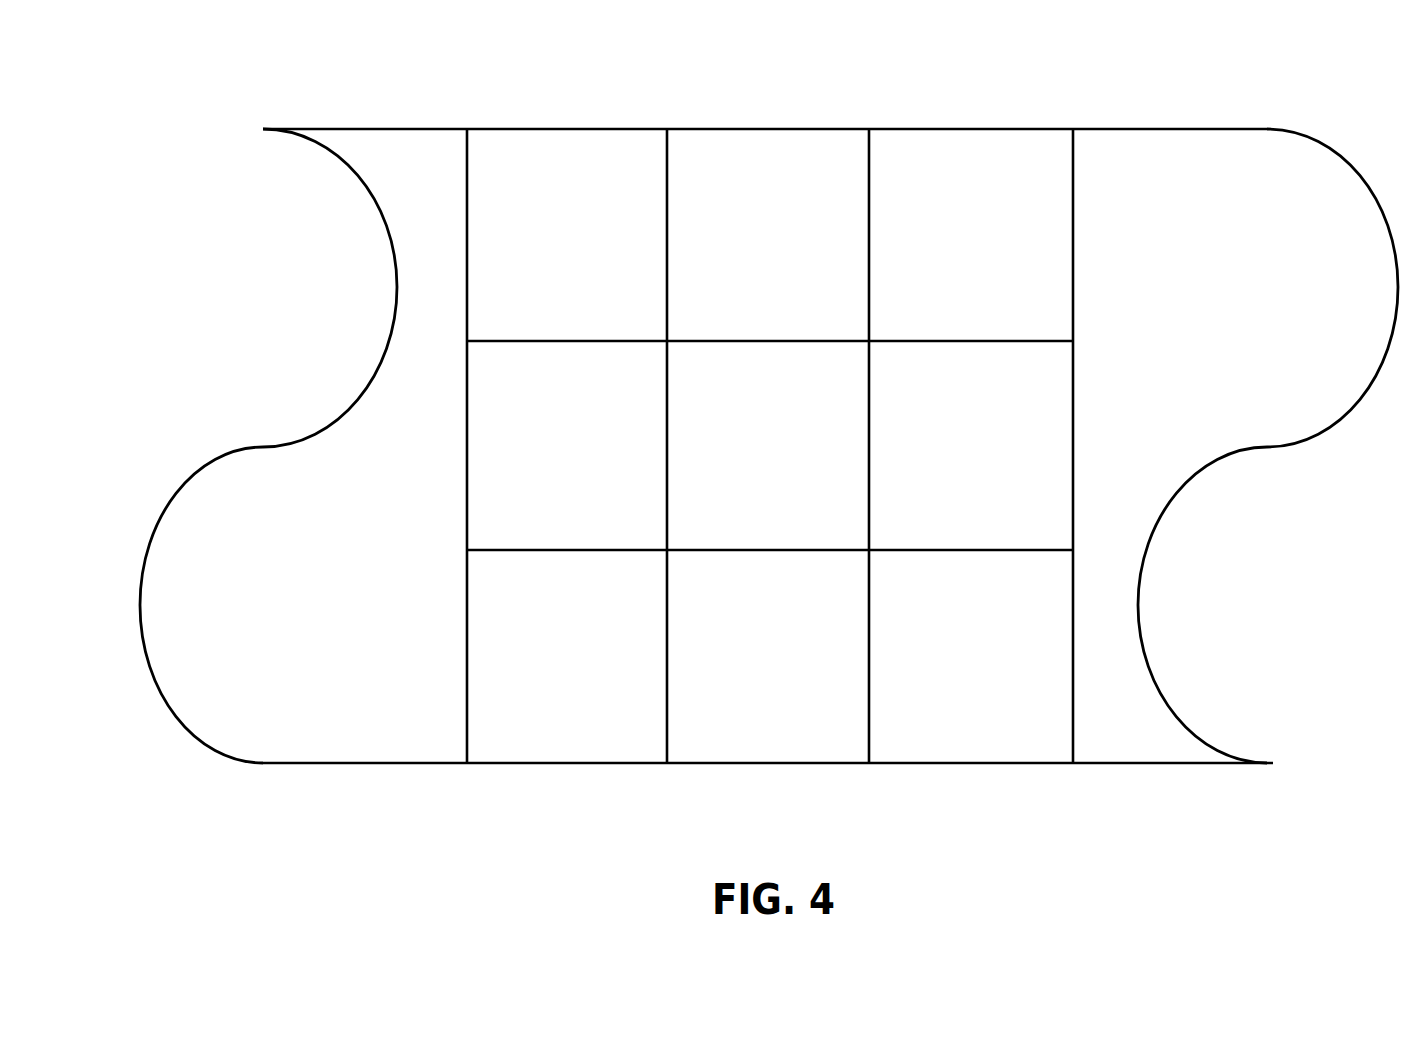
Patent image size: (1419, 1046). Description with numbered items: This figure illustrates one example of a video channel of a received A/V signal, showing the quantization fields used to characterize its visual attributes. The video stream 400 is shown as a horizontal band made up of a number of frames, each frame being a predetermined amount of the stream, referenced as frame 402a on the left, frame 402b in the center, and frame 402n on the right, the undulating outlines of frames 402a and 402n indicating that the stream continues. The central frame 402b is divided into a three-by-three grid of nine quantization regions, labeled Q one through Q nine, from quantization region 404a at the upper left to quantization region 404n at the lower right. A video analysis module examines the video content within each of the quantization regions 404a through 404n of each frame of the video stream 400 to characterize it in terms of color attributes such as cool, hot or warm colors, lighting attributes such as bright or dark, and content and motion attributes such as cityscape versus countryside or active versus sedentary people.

The video stream 400 is at (769, 426).
The frame 402a is at (357, 740).
The frame 402b is at (768, 130).
The frame 402n is at (1143, 743).
The quantization region 404a is at (560, 148).
The quantization region 404n is at (972, 742).